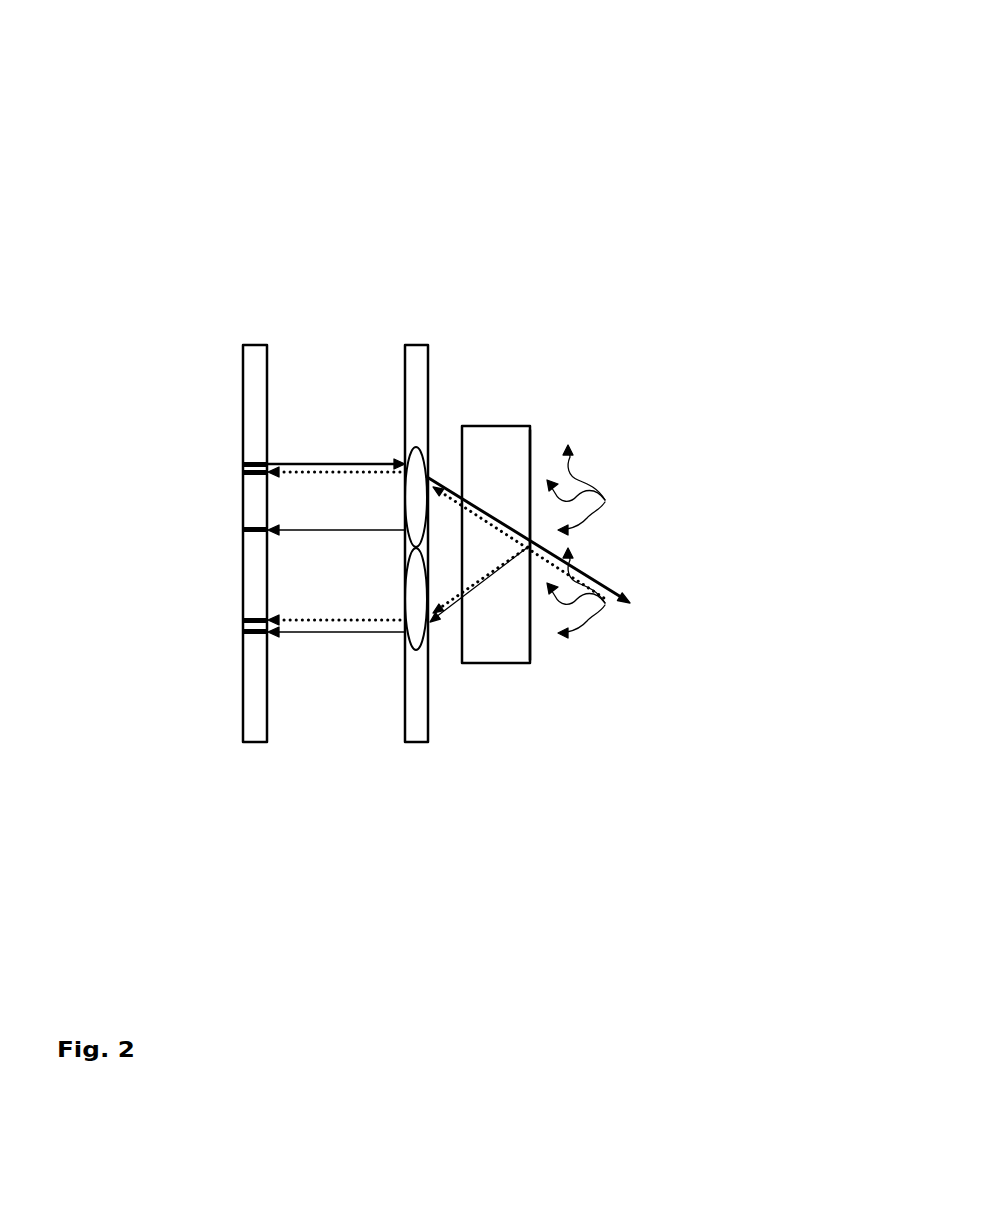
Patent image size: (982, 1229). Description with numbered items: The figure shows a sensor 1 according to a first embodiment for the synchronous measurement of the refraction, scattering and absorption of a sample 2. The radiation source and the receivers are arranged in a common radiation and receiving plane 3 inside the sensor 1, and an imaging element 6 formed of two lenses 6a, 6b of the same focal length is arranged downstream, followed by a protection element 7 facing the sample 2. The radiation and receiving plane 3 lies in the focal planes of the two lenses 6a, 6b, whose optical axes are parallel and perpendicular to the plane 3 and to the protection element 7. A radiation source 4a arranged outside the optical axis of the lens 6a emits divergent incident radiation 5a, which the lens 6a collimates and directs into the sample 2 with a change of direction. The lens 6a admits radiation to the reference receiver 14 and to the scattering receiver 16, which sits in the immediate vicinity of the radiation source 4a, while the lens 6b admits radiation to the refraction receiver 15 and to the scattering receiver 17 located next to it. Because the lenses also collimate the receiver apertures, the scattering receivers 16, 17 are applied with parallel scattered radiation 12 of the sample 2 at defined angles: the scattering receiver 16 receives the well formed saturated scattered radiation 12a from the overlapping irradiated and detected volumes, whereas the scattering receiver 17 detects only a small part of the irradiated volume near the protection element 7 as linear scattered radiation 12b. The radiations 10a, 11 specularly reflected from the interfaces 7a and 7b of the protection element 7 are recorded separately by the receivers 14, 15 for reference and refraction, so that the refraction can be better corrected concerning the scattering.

The sensor 1 is at (172, 155).
The sample 2 is at (684, 483).
The radiation and receiving plane 3 is at (258, 362).
The radiation source 4a is at (270, 462).
The incident radiation 5a is at (328, 462).
The imaging element 6 is at (415, 346).
The lens 6a is at (415, 445).
The lens 6b is at (413, 650).
The protection element 7 is at (510, 425).
The interface 7a is at (458, 628).
The interface 7b is at (531, 625).
The specularly reflected radiation 10a is at (432, 527).
The specularly reflected radiation 11 is at (433, 623).
The scattered radiation 12 is at (575, 618).
The saturated scattered radiation 12a is at (373, 464).
The linear scattered radiation 12b is at (362, 622).
The reference receiver 14 is at (243, 535).
The refraction receiver 15 is at (268, 632).
The scattering receiver 16 is at (245, 473).
The scattering receiver 17 is at (243, 625).